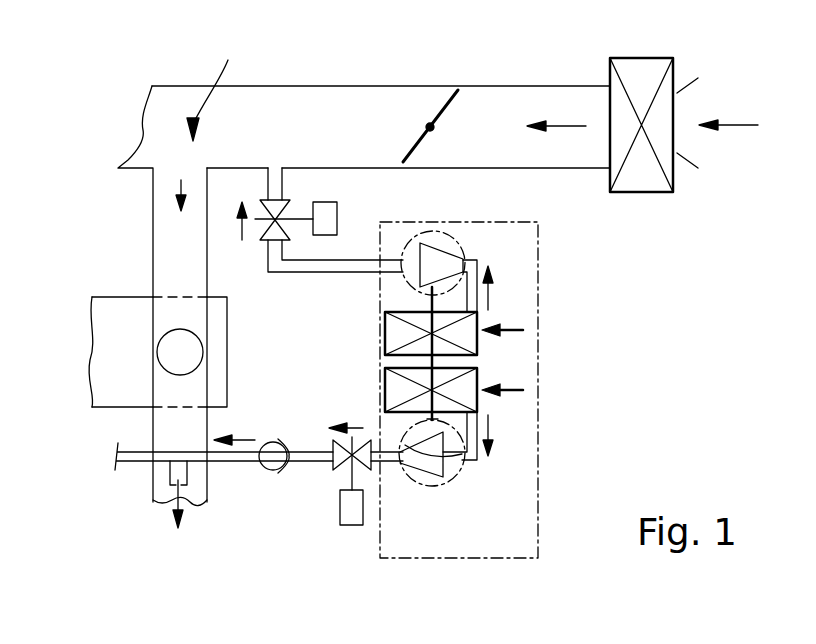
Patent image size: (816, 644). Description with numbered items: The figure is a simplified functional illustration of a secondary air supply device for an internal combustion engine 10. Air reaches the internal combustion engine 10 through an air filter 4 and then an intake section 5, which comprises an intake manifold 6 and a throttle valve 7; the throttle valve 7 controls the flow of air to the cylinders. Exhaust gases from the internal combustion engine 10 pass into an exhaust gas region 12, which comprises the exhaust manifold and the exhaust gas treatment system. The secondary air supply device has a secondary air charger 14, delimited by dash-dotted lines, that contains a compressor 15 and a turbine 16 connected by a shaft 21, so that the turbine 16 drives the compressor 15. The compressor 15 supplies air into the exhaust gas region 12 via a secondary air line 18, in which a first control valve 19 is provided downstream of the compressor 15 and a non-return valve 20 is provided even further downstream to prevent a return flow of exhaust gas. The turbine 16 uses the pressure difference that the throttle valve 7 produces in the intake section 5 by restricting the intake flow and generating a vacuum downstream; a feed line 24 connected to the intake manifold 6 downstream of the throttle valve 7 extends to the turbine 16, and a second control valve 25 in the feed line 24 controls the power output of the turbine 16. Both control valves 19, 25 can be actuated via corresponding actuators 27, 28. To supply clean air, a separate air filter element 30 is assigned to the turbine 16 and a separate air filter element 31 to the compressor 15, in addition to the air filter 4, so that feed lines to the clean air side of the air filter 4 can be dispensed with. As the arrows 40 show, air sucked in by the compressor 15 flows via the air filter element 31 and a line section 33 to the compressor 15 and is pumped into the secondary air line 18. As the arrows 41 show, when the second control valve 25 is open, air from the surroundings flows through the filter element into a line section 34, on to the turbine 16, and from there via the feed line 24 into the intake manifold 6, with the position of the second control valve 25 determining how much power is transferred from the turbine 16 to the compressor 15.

The air filter 4 is at (644, 180).
The intake section 5 is at (211, 86).
The intake manifold 6 is at (273, 86).
The throttle valve 7 is at (444, 100).
The internal combustion engine 10 is at (103, 366).
The exhaust gas region 12 is at (160, 486).
The secondary air charger 14 is at (460, 540).
The compressor 15 is at (420, 484).
The turbine 16 is at (448, 238).
The secondary air line 18 is at (313, 456).
The first control valve 19 is at (336, 467).
The non-return valve 20 is at (274, 470).
The shaft 21 is at (388, 360).
The feed line 24 is at (290, 270).
The second control valve 25 is at (266, 240).
The actuator 27 is at (328, 212).
The actuator 28 is at (351, 515).
The air filter element 30 is at (393, 330).
The air filter element 31 is at (393, 392).
The line section 33 is at (468, 465).
The line section 34 is at (480, 262).
The arrows 40 is at (513, 392).
The arrows 41 is at (240, 240).